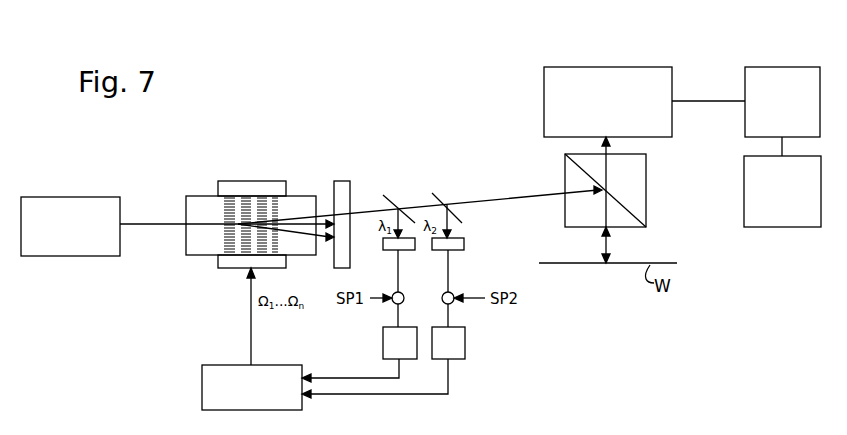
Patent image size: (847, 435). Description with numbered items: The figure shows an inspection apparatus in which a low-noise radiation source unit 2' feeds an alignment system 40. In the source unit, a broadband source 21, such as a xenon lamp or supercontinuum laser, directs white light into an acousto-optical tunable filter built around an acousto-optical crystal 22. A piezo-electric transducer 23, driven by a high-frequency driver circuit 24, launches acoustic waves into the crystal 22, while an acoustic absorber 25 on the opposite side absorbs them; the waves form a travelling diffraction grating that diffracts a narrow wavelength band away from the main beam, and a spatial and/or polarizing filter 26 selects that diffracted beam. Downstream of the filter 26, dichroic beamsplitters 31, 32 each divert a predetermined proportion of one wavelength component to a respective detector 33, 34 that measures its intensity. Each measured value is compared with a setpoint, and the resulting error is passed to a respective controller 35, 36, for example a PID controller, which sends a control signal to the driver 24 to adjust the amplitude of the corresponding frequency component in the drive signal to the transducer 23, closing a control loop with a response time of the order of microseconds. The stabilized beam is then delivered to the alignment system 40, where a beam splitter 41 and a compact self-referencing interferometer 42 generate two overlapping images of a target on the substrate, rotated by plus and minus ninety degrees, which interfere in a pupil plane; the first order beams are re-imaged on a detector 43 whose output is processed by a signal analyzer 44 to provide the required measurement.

The radiation source unit 2' is at (83, 307).
The broadband source 21 is at (70, 226).
The acousto-optical crystal 22 is at (251, 225).
The piezo-electric transducer 23 is at (232, 268).
The high-frequency driver circuit 24 is at (252, 387).
The acoustic absorber 25 is at (252, 181).
The spatial and/or polarizing filter 26 is at (337, 181).
The dichroic beamsplitter 31 is at (384, 196).
The dichroic beamsplitter 32 is at (439, 198).
The detector 33 is at (396, 251).
The detector 34 is at (455, 252).
The controller 35 is at (383, 333).
The controller 36 is at (465, 332).
The alignment system 40 is at (526, 39).
The beam splitter 41 is at (646, 195).
The self-referencing interferometer 42 is at (608, 102).
The detector 43 is at (782, 102).
The signal analyzer 44 is at (782, 191).